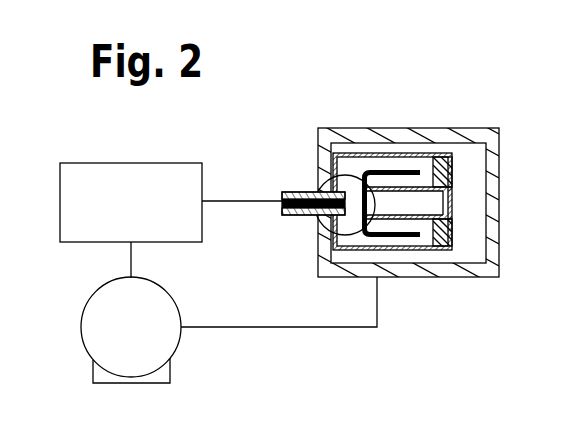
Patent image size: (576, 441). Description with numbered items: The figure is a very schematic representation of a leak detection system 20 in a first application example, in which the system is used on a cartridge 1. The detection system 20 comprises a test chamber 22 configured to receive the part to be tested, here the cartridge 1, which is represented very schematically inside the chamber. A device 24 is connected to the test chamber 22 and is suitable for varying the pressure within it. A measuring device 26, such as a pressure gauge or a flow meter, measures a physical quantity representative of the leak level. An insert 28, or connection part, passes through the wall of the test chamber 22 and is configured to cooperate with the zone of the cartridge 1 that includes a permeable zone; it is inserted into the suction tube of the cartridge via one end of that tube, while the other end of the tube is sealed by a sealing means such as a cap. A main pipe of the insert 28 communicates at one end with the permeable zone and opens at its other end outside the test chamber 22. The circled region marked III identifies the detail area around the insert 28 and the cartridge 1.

The cartridge 1 is at (458, 178).
The detection system 20 is at (59, 274).
The test chamber 22 is at (310, 147).
The device for varying the pressure 24 is at (186, 348).
The measuring device 26 is at (160, 158).
The insert 28 is at (292, 215).
The detail region III is at (348, 238).